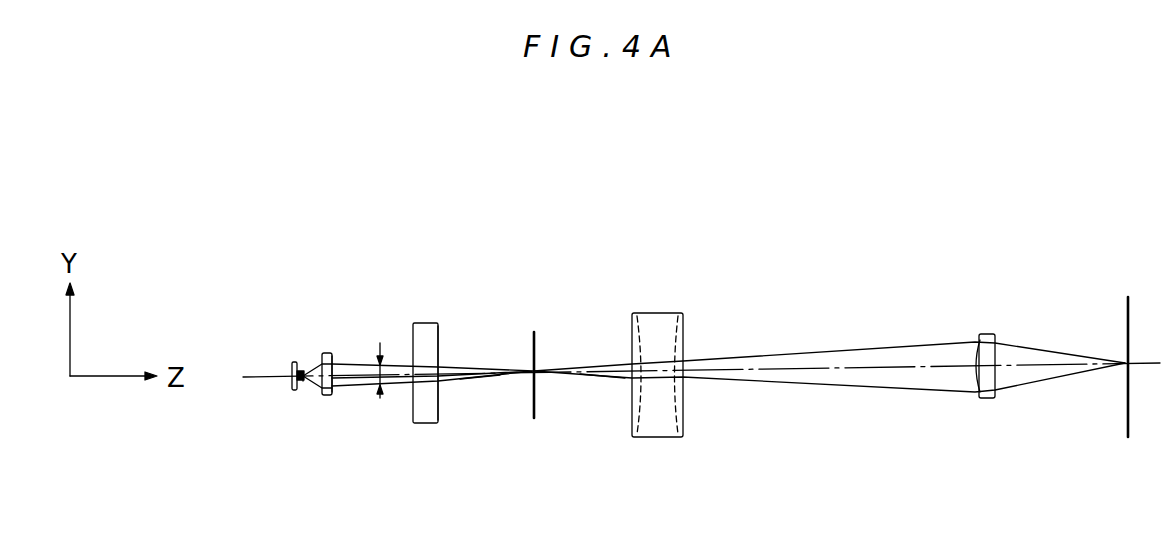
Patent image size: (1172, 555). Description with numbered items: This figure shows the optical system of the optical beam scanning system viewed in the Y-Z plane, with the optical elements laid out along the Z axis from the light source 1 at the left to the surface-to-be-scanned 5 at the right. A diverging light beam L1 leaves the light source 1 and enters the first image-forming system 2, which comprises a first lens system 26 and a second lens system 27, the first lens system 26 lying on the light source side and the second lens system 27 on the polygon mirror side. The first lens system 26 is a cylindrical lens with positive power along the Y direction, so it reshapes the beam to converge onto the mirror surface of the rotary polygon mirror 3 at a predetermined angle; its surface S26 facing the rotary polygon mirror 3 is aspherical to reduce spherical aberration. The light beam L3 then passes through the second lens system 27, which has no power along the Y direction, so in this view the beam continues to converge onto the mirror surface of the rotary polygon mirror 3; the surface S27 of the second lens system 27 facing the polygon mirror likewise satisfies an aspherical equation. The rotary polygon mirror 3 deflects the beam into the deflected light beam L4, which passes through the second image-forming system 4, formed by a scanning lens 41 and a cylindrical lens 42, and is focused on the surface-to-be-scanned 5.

The light source 1 is at (293, 366).
The first image-forming system 2 is at (455, 250).
The first lens system 26 is at (332, 353).
The second lens system 27 is at (427, 323).
The rotary polygon mirror 3 is at (535, 332).
The second image-forming system 4 is at (1017, 240).
The scanning lens 41 is at (648, 314).
The cylindrical lens 42 is at (985, 333).
The surface-to-be-scanned 5 is at (1127, 312).
The diverging light beam L1 is at (302, 383).
The surface of the first lens system S26 is at (337, 393).
The surface of the second lens system S27 is at (440, 410).
The reshaped light beam L3 is at (477, 377).
The deflected light beam L4 is at (618, 377).